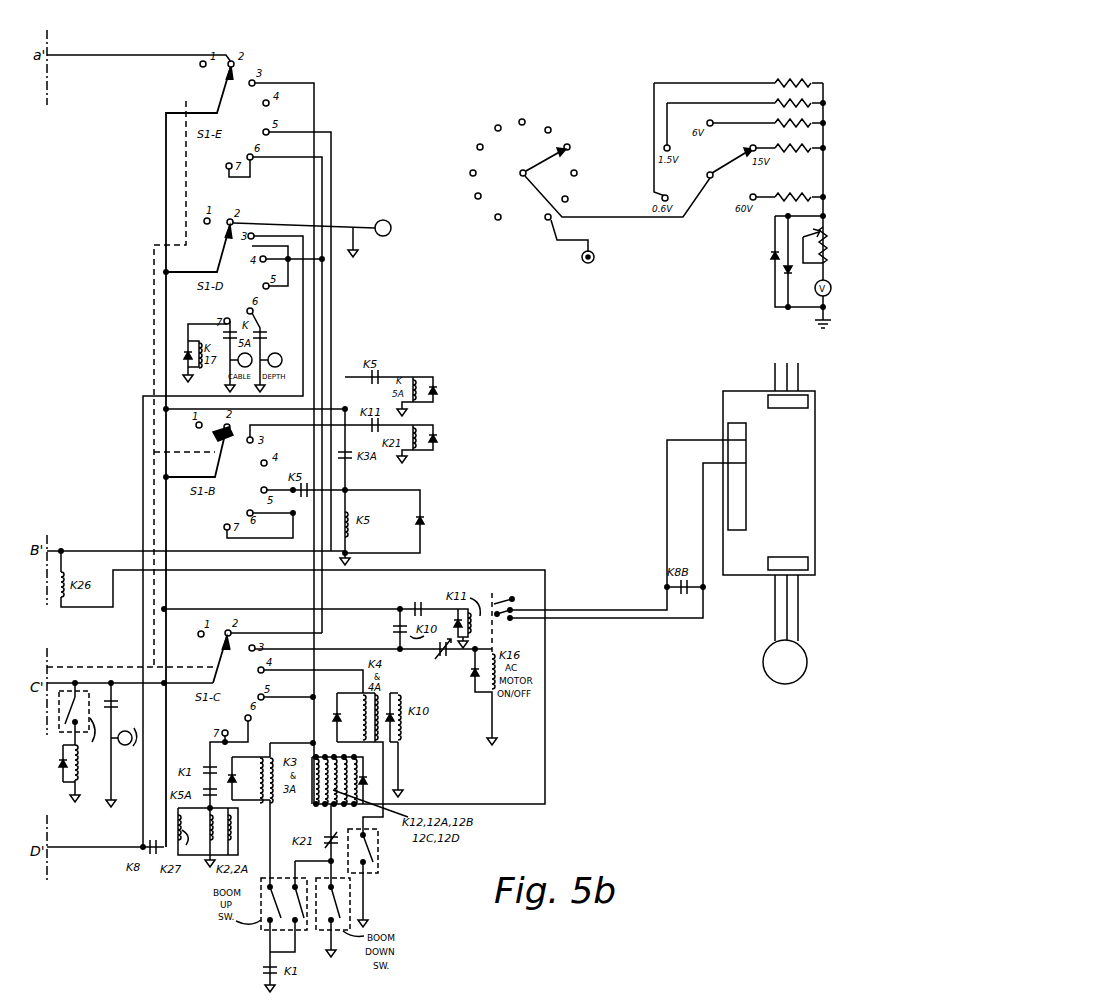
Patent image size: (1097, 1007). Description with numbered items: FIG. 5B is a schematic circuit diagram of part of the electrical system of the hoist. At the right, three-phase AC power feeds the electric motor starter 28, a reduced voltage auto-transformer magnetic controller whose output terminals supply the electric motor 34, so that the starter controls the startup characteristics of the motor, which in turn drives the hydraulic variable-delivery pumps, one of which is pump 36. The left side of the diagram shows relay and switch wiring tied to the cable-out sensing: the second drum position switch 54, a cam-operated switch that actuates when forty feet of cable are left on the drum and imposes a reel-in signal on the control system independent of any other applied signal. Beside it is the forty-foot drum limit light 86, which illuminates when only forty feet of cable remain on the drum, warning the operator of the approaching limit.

The electric motor starter 28 is at (816, 484).
The electric motor 34 is at (807, 675).
The hydraulic variable-delivery pump 36 is at (610, 194).
The second switch 54 is at (79, 742).
The 40 foot drum limit light 86 is at (120, 745).